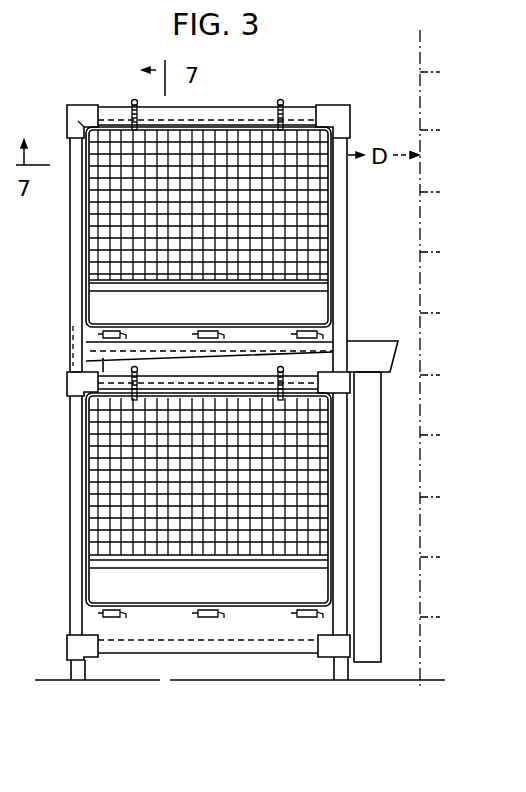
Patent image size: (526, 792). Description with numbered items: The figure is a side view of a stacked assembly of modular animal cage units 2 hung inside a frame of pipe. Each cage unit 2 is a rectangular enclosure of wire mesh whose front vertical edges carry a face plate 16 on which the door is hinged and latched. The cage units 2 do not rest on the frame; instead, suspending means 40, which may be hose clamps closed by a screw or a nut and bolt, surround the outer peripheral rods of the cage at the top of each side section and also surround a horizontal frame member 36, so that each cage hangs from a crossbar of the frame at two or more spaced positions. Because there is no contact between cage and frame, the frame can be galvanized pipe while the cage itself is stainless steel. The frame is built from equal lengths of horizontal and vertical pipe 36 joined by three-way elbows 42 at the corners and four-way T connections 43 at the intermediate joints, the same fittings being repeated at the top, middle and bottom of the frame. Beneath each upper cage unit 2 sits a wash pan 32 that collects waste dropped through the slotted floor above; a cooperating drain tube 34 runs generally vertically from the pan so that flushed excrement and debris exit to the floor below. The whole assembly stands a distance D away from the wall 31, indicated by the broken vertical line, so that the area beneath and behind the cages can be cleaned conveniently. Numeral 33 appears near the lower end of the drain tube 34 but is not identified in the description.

The cage unit 2 is at (44, 356).
The face plate 16 is at (123, 482).
The wall 31 is at (418, 222).
The wash pan 32 is at (362, 356).
The base support 33 is at (240, 656).
The drain tube 34 is at (371, 462).
The pipe 36 is at (76, 252).
The suspending means 40 is at (281, 100).
The 3-way elbow 42 is at (83, 106).
The 4-way T connection 43 is at (68, 388).